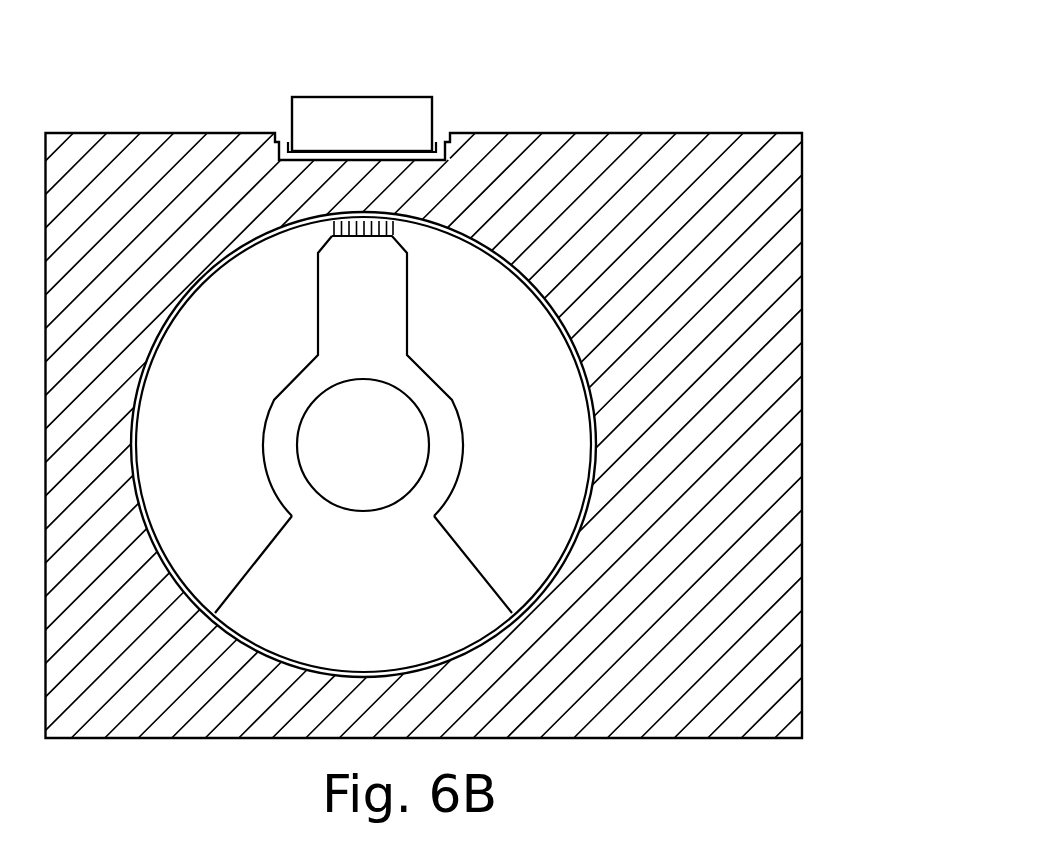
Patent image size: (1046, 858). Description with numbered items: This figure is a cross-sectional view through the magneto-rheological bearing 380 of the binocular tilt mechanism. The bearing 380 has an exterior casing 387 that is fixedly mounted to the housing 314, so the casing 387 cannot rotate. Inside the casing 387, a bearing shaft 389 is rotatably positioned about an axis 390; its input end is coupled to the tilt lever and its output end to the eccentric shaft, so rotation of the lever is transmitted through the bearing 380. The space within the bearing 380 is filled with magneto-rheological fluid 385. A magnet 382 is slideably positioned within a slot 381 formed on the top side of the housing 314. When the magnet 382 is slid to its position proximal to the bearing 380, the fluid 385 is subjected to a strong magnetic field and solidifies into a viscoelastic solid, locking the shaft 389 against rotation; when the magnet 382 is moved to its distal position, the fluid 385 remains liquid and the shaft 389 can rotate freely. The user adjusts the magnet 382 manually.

The housing 314 is at (677, 140).
The magneto-rheological bearing 380 is at (479, 211).
The slot 381 is at (276, 156).
The magnet 382 is at (385, 97).
The magneto-rheological fluid 385 is at (237, 468).
The exterior casing 387 is at (597, 405).
The bearing shaft 389 is at (366, 616).
The axis 390 is at (396, 450).